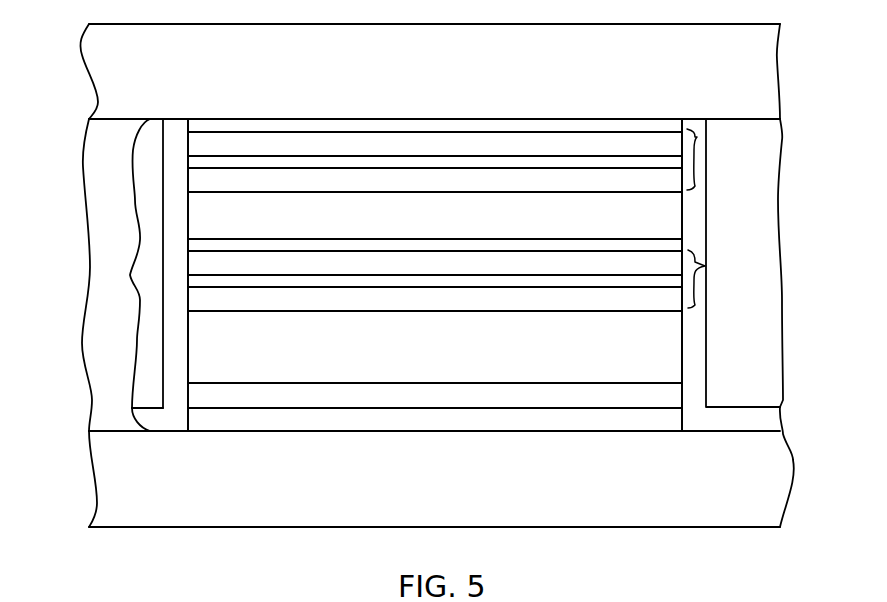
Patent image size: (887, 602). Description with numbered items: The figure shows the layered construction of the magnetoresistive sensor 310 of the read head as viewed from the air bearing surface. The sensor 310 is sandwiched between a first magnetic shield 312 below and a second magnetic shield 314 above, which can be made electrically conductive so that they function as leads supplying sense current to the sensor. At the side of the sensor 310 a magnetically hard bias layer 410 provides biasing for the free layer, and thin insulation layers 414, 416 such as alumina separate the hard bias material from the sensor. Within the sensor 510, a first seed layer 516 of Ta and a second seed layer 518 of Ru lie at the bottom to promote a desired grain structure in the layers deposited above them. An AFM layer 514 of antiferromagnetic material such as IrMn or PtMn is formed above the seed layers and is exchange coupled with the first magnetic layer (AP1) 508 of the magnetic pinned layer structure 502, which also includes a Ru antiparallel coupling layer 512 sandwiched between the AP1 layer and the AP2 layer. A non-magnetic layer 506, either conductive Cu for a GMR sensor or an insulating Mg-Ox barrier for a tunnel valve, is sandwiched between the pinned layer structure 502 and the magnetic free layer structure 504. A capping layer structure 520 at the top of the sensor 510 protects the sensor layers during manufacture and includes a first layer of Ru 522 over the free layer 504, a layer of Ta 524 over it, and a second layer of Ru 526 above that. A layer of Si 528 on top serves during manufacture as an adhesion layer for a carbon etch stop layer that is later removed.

The second magnetic shield 314 is at (426, 58).
The first magnetic shield 312 is at (461, 471).
The magnetoresistive sensor 310 is at (132, 157).
The hard bias layer 410 is at (118, 325).
The insulation layer 416 is at (107, 416).
The insulation layer 414 is at (693, 353).
The layer of Si 528 is at (620, 127).
The second layer of Ru 526 is at (463, 144).
The layer of Ta 524 is at (620, 163).
The first layer of Ru 522 is at (463, 181).
The magnetic free layer structure 504 is at (463, 217).
The non-magnetic layer 506 is at (636, 243).
The sensor 510 is at (463, 262).
The antiparallel coupling layer 512 is at (622, 280).
The first magnetic layer (AP1) 508 is at (463, 300).
The AFM layer 514 is at (463, 349).
The second seed layer 518 is at (463, 395).
The first seed layer 516 is at (463, 420).
The capping layer structure 520 is at (697, 137).
The magnetic pinned layer structure 502 is at (717, 279).